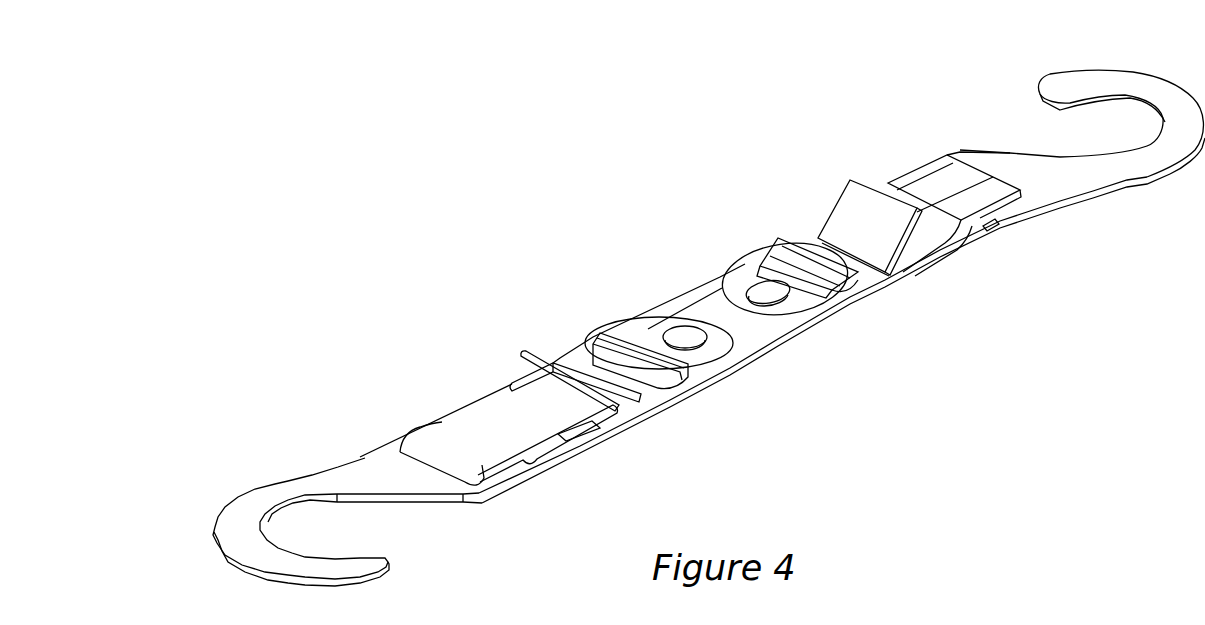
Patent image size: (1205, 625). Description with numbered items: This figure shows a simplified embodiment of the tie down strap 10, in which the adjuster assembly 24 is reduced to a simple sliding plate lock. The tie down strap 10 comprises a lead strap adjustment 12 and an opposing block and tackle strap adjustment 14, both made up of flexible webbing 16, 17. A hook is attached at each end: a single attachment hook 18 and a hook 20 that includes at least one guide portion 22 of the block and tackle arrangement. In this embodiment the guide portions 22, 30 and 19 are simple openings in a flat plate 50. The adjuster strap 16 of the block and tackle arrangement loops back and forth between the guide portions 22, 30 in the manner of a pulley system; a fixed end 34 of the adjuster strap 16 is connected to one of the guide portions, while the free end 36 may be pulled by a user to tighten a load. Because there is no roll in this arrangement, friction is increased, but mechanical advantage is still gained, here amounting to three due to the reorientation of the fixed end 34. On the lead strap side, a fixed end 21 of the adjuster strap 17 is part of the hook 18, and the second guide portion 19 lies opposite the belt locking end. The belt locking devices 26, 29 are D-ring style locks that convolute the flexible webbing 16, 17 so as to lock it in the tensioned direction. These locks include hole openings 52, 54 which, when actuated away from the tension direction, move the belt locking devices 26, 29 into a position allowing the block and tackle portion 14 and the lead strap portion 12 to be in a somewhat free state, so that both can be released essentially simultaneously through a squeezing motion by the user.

The tie down strap 10 is at (424, 156).
The lead strap adjustment 12 is at (789, 159).
The block and tackle strap adjustment 14 is at (382, 284).
The flexible webbing 16 is at (513, 427).
The flexible webbing 17 is at (920, 260).
The single attachment hook 18 is at (1177, 140).
The second guide portion 19 is at (1020, 190).
The hook 20 is at (362, 560).
The fixed end 21 is at (940, 187).
The guide portion 22 is at (427, 467).
The adjuster assembly 24 is at (646, 262).
The belt locking device 26 is at (622, 328).
The belt locking device 29 is at (748, 275).
The first guide portion 30 is at (632, 400).
The fixed end 34 is at (577, 437).
The free end 36 is at (557, 372).
The flat plate 50 is at (778, 340).
The hole opening 52 is at (689, 342).
The hole opening 54 is at (777, 297).